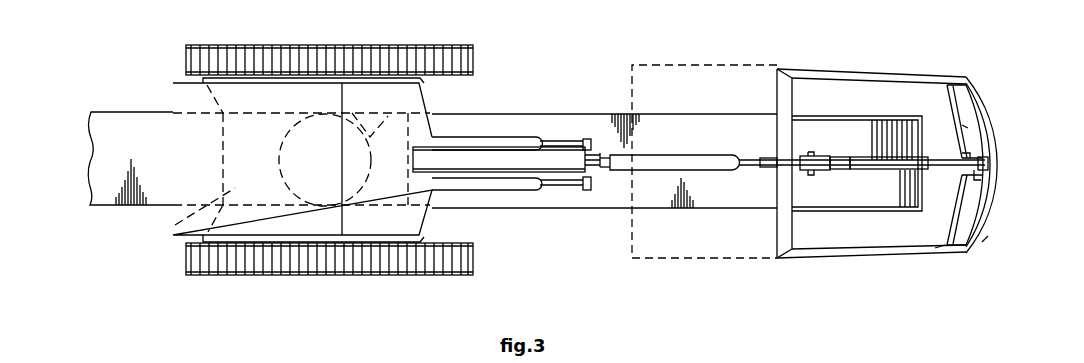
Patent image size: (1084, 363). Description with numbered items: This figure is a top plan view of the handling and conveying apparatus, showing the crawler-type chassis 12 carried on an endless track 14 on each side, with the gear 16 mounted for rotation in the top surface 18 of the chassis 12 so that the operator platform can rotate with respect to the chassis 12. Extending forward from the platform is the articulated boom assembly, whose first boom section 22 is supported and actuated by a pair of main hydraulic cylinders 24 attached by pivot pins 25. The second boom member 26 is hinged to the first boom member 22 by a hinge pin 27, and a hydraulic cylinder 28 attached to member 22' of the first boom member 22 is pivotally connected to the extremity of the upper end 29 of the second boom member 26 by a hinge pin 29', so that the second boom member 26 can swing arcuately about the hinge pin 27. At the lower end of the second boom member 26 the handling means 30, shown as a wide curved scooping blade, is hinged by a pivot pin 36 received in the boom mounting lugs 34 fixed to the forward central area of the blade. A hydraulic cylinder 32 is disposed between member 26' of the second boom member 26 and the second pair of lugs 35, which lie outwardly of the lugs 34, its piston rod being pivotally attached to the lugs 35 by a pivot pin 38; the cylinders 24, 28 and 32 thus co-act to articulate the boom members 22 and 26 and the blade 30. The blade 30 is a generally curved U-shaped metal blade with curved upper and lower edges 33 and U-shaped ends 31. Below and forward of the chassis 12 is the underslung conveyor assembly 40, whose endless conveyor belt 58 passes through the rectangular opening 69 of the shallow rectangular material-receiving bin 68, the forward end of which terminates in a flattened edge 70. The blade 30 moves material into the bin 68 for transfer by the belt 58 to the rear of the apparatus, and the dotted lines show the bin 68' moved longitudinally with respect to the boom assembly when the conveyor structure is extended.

The chassis 12 is at (421, 232).
The endless track 14 is at (232, 47).
The gear 16 is at (337, 147).
The top surface 18 is at (170, 229).
The first boom section 22 is at (499, 132).
The member of first boom member 22' is at (635, 113).
The main hydraulic cylinders 24 is at (488, 138).
The pivot pins 25 is at (590, 114).
The second boom member 26 is at (857, 152).
The member of second boom member 26' is at (840, 147).
The hinge pin 27 is at (822, 172).
The hydraulic cylinder 28 is at (682, 156).
The upper end 29 is at (804, 141).
The hinge pin 29' is at (756, 183).
The handling means 30 is at (982, 243).
The U-shaped ends 31 is at (958, 83).
The hydraulic cylinder 32 is at (870, 170).
The curved upper and lower edges 33 is at (935, 250).
The boom mounting lugs 34 is at (963, 154).
The lugs 35 is at (962, 125).
The pivot pin 36 is at (980, 170).
The pivot pin 38 is at (972, 180).
The conveyor assembly 40 is at (621, 208).
The conveyor belt 58 is at (640, 212).
The bin 68 is at (871, 143).
The bin extended position 68' is at (704, 140).
The rectangular opening 69 is at (809, 113).
The flattened edge 70 is at (985, 95).